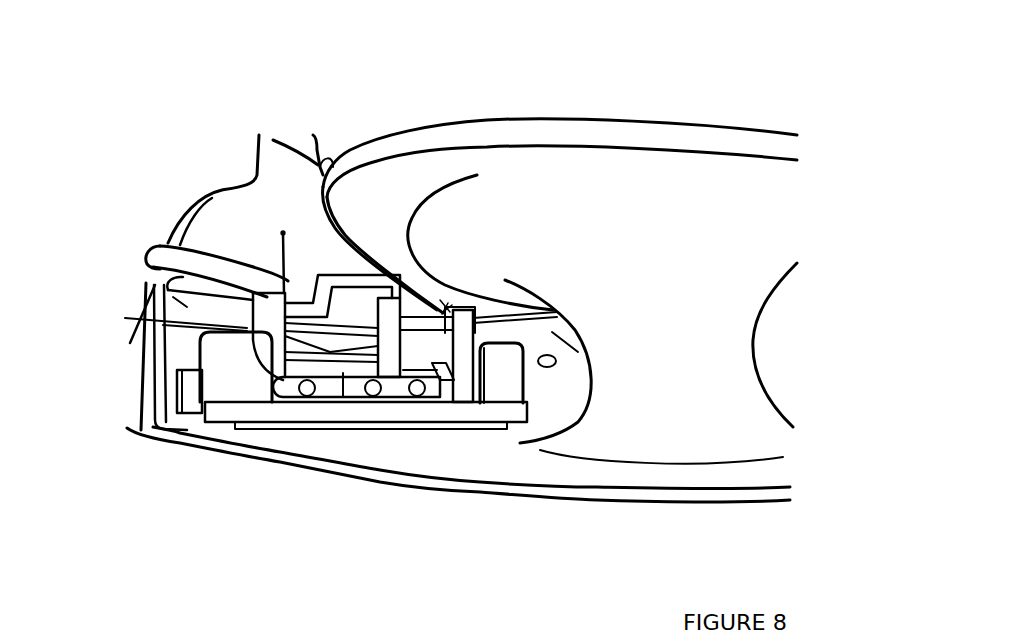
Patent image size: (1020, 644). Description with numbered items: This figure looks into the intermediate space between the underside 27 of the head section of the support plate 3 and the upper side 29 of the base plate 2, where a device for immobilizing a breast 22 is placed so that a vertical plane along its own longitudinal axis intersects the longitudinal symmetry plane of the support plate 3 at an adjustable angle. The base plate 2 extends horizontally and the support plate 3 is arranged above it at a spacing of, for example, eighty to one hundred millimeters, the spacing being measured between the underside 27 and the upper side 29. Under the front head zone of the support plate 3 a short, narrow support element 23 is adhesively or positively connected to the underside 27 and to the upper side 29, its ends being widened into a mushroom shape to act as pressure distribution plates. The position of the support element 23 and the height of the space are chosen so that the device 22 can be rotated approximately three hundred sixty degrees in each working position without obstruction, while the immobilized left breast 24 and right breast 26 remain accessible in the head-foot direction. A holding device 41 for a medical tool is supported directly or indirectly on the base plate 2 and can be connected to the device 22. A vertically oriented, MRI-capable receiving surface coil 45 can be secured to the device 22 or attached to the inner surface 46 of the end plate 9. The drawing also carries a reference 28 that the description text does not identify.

The base plate 2 is at (310, 447).
The support plate 3 is at (383, 150).
The end plate 9 is at (178, 358).
The device for immobilizing a breast 22 is at (125, 318).
The support element 23 is at (717, 297).
The left breast 24 is at (313, 260).
The right breast 26 is at (592, 385).
The underside of support plate 27 is at (412, 177).
The axis 28 is at (563, 390).
The upper side of base plate 29 is at (433, 433).
The holding device 41 is at (393, 347).
The receiving surface coil 45 is at (468, 300).
The inner surface of end plate 46 is at (147, 281).